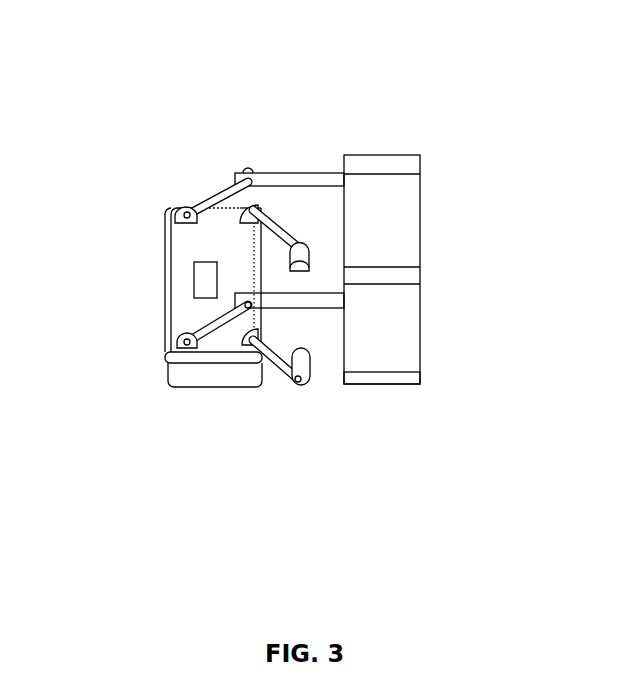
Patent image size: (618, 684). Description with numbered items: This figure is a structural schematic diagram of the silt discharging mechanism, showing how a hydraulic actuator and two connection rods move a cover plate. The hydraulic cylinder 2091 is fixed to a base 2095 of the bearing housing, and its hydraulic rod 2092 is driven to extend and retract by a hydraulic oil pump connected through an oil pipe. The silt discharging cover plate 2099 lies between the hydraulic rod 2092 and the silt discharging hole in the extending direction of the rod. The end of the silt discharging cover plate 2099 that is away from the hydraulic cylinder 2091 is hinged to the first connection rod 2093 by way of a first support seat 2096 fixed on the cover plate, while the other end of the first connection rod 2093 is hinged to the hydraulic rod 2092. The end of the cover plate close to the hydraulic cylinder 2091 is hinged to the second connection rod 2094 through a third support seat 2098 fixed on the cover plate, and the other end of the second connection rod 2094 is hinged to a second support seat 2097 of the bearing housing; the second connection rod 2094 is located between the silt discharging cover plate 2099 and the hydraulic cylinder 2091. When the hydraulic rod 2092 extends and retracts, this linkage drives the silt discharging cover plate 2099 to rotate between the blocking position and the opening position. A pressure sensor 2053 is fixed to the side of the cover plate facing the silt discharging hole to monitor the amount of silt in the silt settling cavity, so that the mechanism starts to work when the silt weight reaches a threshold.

The hydraulic cylinder 2091 is at (400, 160).
The hydraulic rod 2092 is at (300, 175).
The first connection rod 2093 is at (210, 197).
The second connection rod 2094 is at (280, 362).
The base 2095 is at (390, 377).
The first support seat 2096 is at (180, 208).
The second support seat 2097 is at (300, 256).
The third support seat 2098 is at (248, 338).
The silt discharging cover plate 2099 is at (183, 250).
The pressure sensor 2053 is at (207, 283).